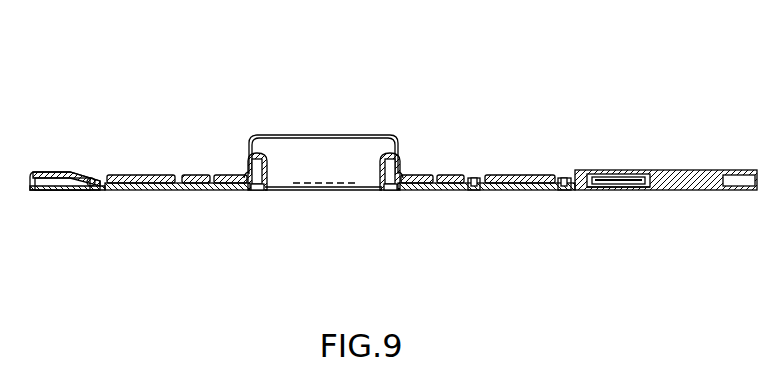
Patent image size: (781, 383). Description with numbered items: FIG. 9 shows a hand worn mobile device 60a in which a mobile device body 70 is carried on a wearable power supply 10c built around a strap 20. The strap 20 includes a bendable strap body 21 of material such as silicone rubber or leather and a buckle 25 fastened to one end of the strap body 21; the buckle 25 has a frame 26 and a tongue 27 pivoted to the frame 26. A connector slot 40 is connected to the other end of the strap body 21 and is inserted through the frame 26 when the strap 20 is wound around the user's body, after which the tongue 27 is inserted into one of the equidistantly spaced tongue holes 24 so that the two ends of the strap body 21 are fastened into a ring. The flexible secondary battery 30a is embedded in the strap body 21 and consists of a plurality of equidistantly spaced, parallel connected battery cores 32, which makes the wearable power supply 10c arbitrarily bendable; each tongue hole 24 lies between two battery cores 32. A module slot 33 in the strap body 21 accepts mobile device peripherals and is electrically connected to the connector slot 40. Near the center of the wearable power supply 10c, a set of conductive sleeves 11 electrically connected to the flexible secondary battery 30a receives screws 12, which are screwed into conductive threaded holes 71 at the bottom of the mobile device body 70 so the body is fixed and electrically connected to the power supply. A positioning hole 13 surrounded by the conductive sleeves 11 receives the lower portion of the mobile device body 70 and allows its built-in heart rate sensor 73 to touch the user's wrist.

The wearable power supply 10c is at (631, 165).
The conductive sleeves 11 is at (246, 178).
The screws 12 is at (257, 190).
The positioning hole 13 is at (282, 190).
The strap 20 is at (520, 172).
The strap body 21 is at (582, 172).
The tongue holes 24 is at (472, 180).
The buckle 25 is at (58, 121).
The frame 26 is at (30, 180).
The tongue 27 is at (66, 140).
The flexible secondary battery 30a is at (326, 236).
The battery cores 32 is at (135, 192).
The module slot 33 is at (618, 192).
The connector slot 40 is at (702, 172).
The hand worn mobile device 60a is at (323, 93).
The mobile device body 70 is at (362, 150).
The conductive threaded holes 71 is at (243, 150).
The heart rate sensor 73 is at (322, 190).